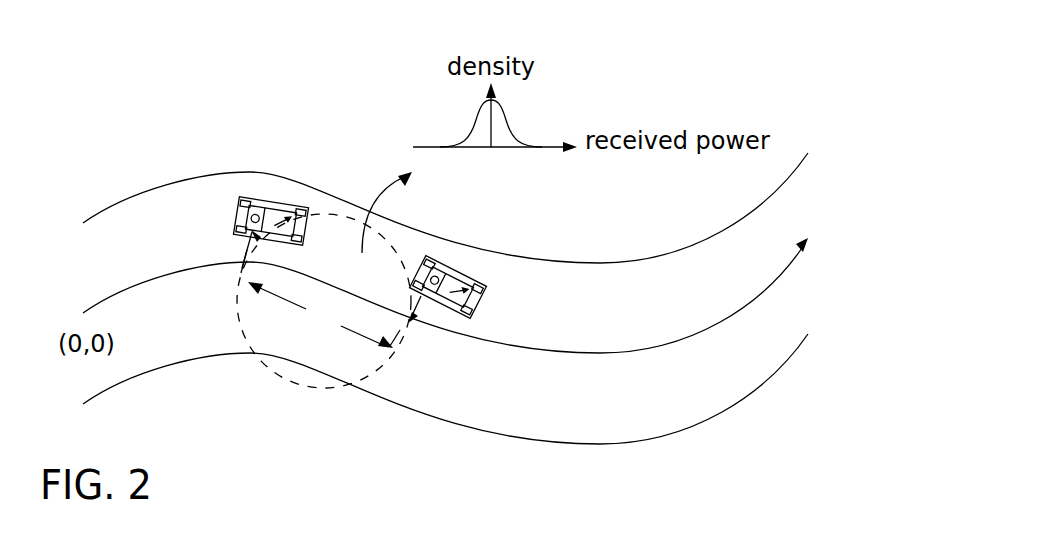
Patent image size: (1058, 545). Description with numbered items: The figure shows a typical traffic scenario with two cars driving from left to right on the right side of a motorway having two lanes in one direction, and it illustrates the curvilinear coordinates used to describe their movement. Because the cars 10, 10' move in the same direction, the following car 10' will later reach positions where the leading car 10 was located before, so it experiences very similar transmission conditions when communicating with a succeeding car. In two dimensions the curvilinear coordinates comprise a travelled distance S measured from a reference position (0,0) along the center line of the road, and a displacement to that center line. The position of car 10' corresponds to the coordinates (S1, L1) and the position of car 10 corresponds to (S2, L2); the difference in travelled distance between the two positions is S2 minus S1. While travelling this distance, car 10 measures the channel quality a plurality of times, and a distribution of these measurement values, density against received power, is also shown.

The car 10 is at (478, 291).
The car 10' is at (237, 221).
The displacement to the center line L1 is at (245, 248).
The displacement to the center line L2 is at (417, 306).
The travelled distance S1 is at (225, 279).
The travelled distance S2 is at (409, 358).
The travelled distance S is at (811, 260).